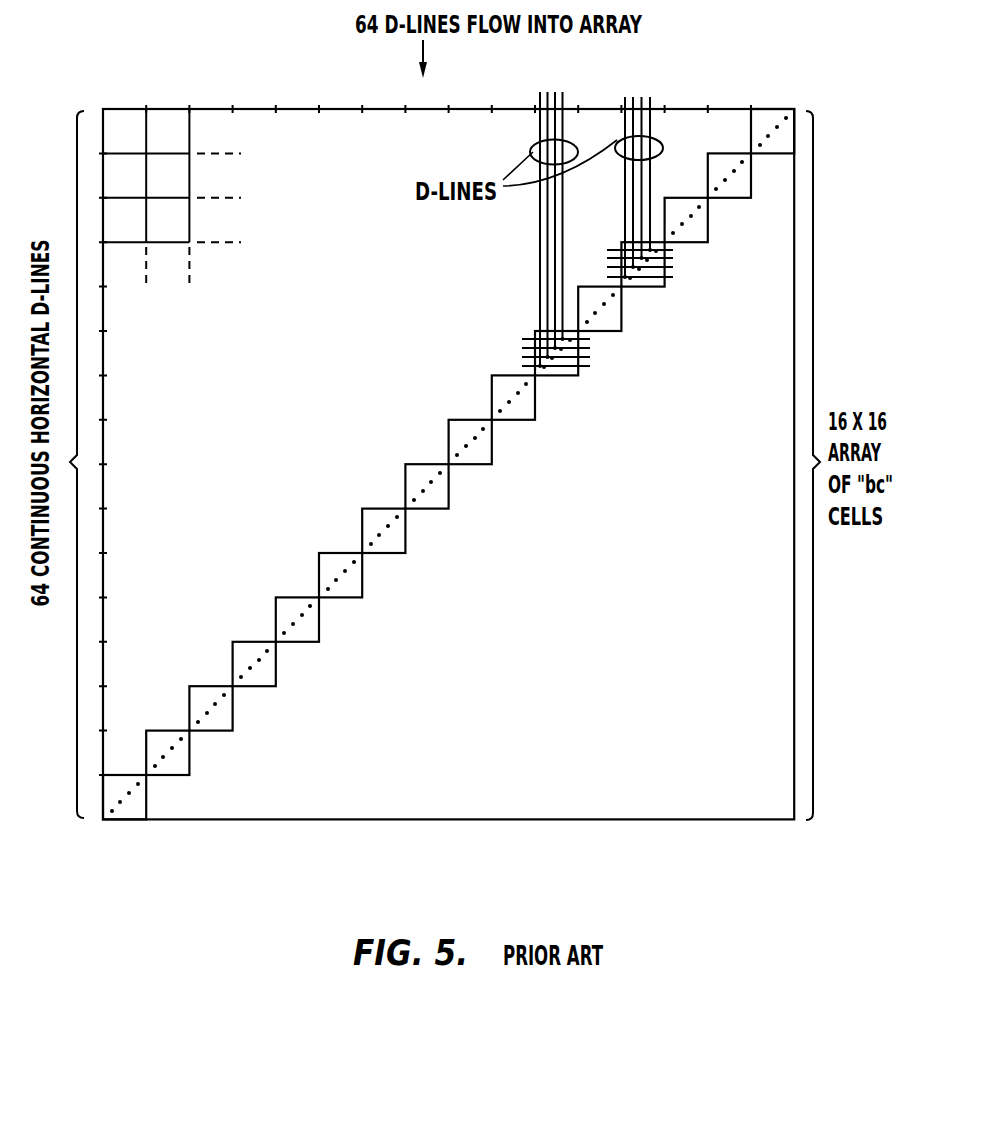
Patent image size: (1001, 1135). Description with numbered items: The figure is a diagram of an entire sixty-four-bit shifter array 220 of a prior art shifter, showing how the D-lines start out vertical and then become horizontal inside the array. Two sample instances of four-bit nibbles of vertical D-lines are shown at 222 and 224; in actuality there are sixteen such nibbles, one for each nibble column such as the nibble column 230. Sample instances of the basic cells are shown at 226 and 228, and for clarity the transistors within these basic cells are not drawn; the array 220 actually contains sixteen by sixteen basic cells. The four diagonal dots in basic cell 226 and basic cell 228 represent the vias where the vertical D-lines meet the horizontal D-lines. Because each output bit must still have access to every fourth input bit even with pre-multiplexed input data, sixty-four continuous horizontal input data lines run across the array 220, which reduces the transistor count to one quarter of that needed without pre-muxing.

The 16x16 array of bc cells 220 is at (827, 90).
The nibble of vertical D-lines 222 is at (652, 93).
The nibble of vertical D-lines 224 is at (567, 89).
The basic cell 226 is at (655, 287).
The basic cell 228 is at (562, 376).
The nibble column 230 is at (766, 90).